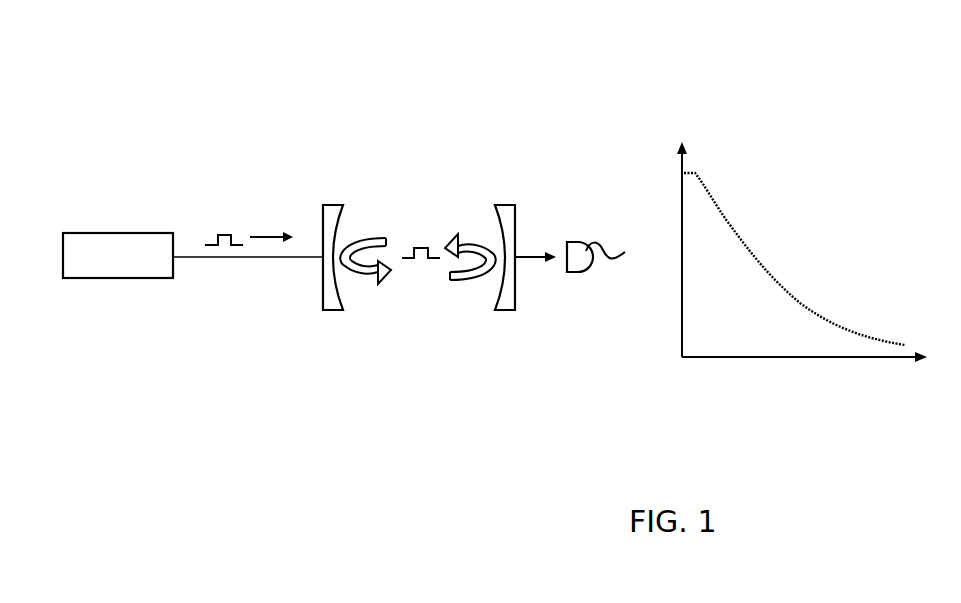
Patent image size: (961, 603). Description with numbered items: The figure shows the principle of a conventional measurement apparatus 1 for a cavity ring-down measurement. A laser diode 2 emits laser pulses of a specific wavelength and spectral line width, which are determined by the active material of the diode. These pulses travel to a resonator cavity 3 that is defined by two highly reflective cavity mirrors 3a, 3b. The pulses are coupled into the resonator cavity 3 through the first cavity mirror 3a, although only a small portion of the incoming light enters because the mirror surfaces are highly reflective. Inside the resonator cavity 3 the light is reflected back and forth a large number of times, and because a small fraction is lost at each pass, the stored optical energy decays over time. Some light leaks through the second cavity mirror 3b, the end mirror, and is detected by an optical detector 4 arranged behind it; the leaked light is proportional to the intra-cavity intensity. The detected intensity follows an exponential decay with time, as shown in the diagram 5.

The measurement apparatus 1 is at (607, 62).
The laser diode 2 is at (120, 278).
The resonator cavity 3 is at (419, 267).
The first cavity mirror 3a is at (324, 215).
The second cavity mirror 3b is at (516, 212).
The optical detector 4 is at (588, 272).
The diagram 5 is at (873, 101).